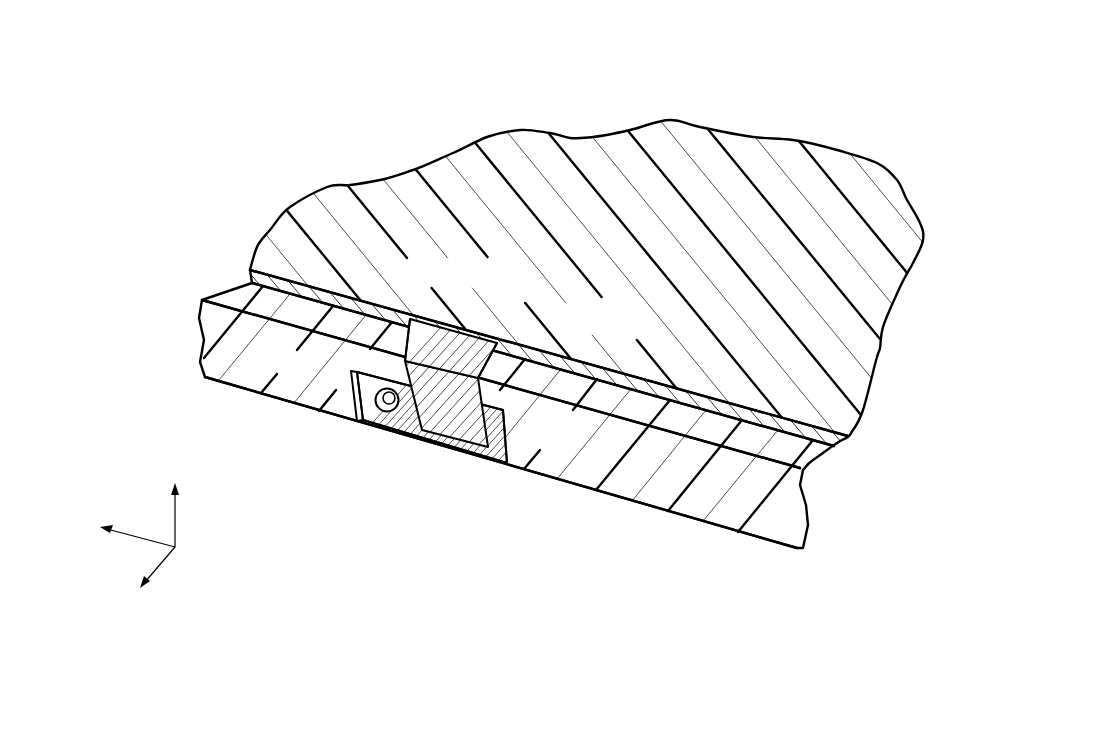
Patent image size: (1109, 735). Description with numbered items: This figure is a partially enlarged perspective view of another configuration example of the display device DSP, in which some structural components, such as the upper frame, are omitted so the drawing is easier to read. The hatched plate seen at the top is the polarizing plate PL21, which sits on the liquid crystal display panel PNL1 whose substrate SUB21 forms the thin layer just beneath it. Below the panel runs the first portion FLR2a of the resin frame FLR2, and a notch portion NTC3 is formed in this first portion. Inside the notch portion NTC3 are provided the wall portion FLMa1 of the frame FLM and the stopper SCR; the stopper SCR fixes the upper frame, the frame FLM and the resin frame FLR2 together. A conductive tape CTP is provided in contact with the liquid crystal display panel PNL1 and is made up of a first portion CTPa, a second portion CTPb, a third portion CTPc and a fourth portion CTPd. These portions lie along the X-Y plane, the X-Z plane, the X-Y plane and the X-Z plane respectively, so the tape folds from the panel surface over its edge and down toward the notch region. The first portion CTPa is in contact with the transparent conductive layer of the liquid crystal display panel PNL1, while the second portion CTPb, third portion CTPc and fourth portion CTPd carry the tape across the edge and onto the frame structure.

The display device DSP is at (884, 128).
The polarizing plate PL21 is at (870, 350).
The liquid crystal display panel PNL1 is at (248, 270).
The substrate SUB21 is at (499, 324).
The first portion of the resin frame FLR2a is at (628, 484).
The resin frame FLR2 is at (501, 447).
The wall portion of the frame FLMa1 is at (359, 422).
The frame FLM is at (404, 447).
The notch portion NTC3 is at (352, 397).
The stopper SCR is at (391, 412).
The conductive tape CTP is at (507, 347).
The first portion CTPa is at (442, 318).
The second portion CTPb is at (403, 361).
The third portion CTPc is at (531, 341).
The fourth portion CTPd is at (487, 432).